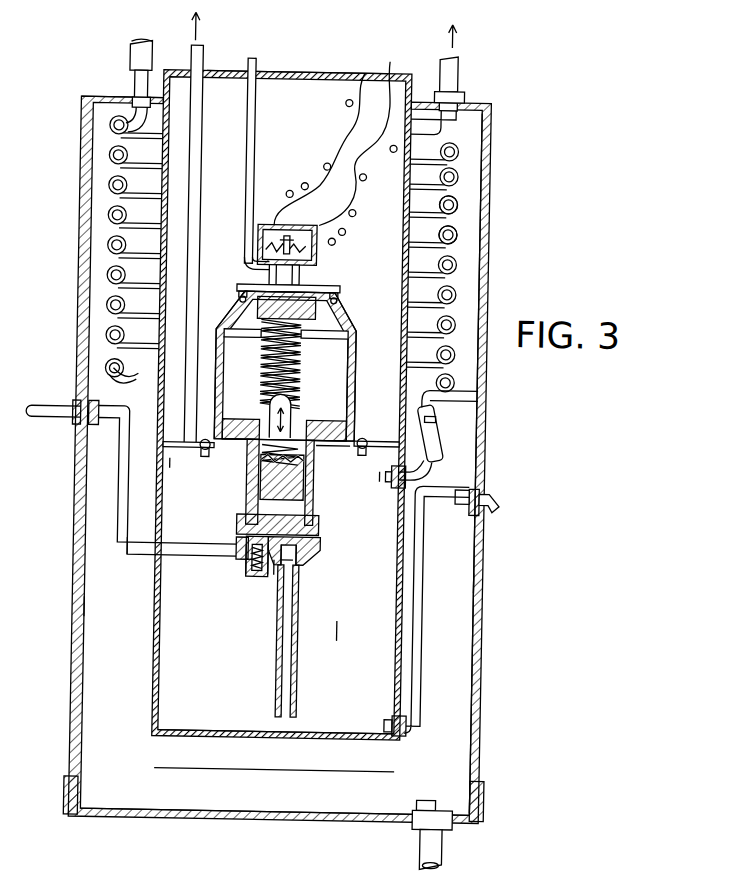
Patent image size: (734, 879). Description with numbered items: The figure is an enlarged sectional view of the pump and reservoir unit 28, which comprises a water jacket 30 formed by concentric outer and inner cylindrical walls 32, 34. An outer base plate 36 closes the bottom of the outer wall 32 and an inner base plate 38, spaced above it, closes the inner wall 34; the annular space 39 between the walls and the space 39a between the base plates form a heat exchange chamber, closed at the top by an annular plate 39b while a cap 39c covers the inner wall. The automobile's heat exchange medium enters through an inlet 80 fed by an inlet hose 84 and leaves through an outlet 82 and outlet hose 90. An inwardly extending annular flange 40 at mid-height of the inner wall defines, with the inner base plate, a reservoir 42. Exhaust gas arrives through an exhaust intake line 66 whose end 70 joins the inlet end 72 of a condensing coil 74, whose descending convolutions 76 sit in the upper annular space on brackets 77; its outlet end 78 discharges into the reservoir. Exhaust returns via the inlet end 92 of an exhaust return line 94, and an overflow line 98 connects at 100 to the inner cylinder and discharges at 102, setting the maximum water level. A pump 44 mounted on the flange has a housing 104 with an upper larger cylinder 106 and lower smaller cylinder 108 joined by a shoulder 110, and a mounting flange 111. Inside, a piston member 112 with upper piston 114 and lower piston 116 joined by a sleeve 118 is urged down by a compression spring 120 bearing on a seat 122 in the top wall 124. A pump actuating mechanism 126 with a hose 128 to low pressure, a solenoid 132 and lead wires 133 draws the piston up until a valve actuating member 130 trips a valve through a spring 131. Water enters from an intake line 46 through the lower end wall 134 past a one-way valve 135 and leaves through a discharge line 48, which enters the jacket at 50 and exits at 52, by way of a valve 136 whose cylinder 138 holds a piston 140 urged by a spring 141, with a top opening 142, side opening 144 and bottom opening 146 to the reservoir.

The pump and reservoir unit 28 is at (548, 464).
The water jacket 30 is at (490, 645).
The outer cylindrical wall 32 is at (482, 596).
The inner cylindrical wall 34 is at (398, 674).
The outer base plate 36 is at (342, 822).
The inner base plate 38 is at (340, 740).
The annular space 39 is at (132, 613).
The space between base plates 39a is at (272, 783).
The annular plate 39b is at (97, 101).
The cap 39c is at (312, 73).
The annular flange 40 is at (366, 486).
The reservoir 42 is at (346, 630).
The pump 44 is at (346, 318).
The intake line 46 is at (306, 612).
The discharge line 48 is at (62, 409).
The discharge line entry into jacket 50 is at (162, 560).
The discharge line exit through outer wall 52 is at (78, 428).
The exhaust intake line 66 is at (452, 64).
The other end of exhaust intake line 70 is at (458, 92).
The inlet end of condensing coil 72 is at (452, 122).
The condensing coil 74 is at (462, 178).
The convolutions 76 is at (455, 240).
The brackets 77 is at (100, 375).
The outlet end of condensing coil 78 is at (441, 410).
The jacket inlet 80 is at (446, 838).
The jacket outlet 82 is at (137, 76).
The inlet hose 84 is at (425, 818).
The outlet hose 90 is at (145, 46).
The inlet end of exhaust return line 92 is at (178, 460).
The exhaust return line 94 is at (197, 224).
The overflow line 98 is at (424, 678).
The overflow line connection 100 is at (398, 740).
The overflow line discharge end 102 is at (500, 491).
The pump housing 104 is at (354, 341).
The upper housing portion 106 is at (352, 370).
The lower housing portion 108 is at (316, 506).
The annular shoulder portion 110 is at (328, 445).
The annular flange 111 is at (364, 440).
The piston member 112 is at (328, 412).
The upper piston portion 114 is at (268, 438).
The lower piston portion 116 is at (265, 506).
The sleeve member 118 is at (262, 472).
The compression spring 120 is at (298, 366).
The seat 122 is at (310, 313).
The top wall 124 is at (312, 284).
The pump actuating mechanism 126 is at (303, 223).
The hose 128 is at (249, 132).
The valve actuating member 130 is at (250, 446).
The spring 131 is at (262, 364).
The solenoid 132 is at (270, 225).
The lead wires 133 is at (347, 152).
The lower end wall 134 is at (312, 546).
The one-way valve 135 is at (316, 562).
The valve 136 is at (253, 578).
The valve cylinder 138 is at (250, 576).
The valve piston 140 is at (273, 580).
The spring 141 is at (266, 580).
The top opening 142 is at (240, 542).
The side opening 144 is at (248, 584).
The bottom opening 146 is at (283, 572).